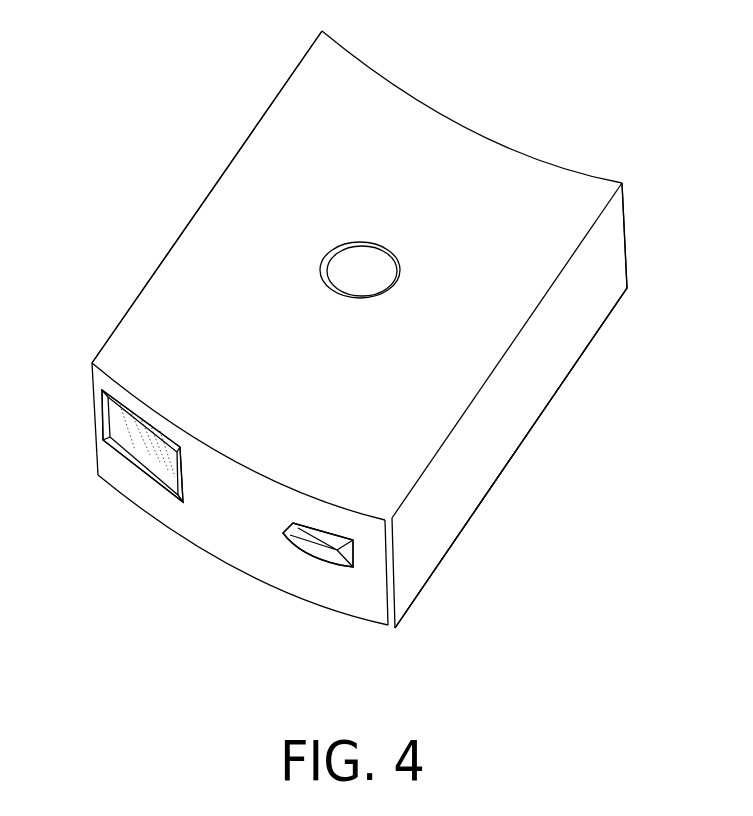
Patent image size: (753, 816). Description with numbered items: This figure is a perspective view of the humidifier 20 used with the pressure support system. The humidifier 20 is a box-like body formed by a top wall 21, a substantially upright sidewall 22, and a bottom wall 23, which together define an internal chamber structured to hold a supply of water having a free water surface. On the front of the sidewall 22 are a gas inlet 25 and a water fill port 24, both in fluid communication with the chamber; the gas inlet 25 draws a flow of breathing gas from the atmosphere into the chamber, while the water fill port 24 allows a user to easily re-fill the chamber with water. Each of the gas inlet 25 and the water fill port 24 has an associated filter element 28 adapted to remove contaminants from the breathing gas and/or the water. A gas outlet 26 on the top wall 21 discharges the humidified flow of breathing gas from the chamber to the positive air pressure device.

The humidifier 20 is at (580, 77).
The top wall 21 is at (262, 125).
The sidewall 22 is at (560, 362).
The bottom wall 23 is at (498, 477).
The water fill port 24 is at (323, 563).
The gas inlet 25 is at (137, 473).
The gas outlet 26 is at (365, 257).
The filter element 28 is at (110, 425).